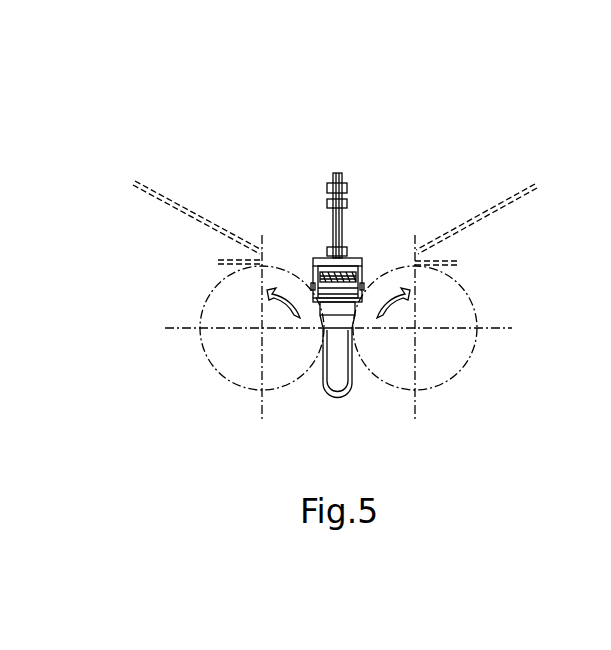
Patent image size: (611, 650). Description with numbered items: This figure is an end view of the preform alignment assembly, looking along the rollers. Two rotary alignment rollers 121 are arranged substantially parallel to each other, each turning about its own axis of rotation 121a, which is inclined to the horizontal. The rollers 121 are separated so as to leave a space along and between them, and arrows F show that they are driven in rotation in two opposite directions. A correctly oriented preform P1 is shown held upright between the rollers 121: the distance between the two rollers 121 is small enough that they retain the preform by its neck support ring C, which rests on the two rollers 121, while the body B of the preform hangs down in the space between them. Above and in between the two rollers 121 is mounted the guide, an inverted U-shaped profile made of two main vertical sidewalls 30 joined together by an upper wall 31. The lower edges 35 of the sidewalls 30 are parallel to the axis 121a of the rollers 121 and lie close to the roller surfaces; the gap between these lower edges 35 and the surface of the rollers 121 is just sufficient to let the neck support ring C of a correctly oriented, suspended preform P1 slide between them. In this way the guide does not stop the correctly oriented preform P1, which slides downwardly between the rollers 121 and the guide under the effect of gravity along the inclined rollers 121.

The main vertical sidewalls 30 is at (318, 257).
The upper wall 31 is at (352, 252).
The neck support ring C is at (364, 276).
The rotary alignment rollers 121 is at (215, 347).
The axis of rotation 121a is at (255, 323).
The lower edges 35 is at (312, 304).
The body B is at (351, 379).
The correctly oriented preform P1 is at (318, 401).
The arrows F is at (337, 307).